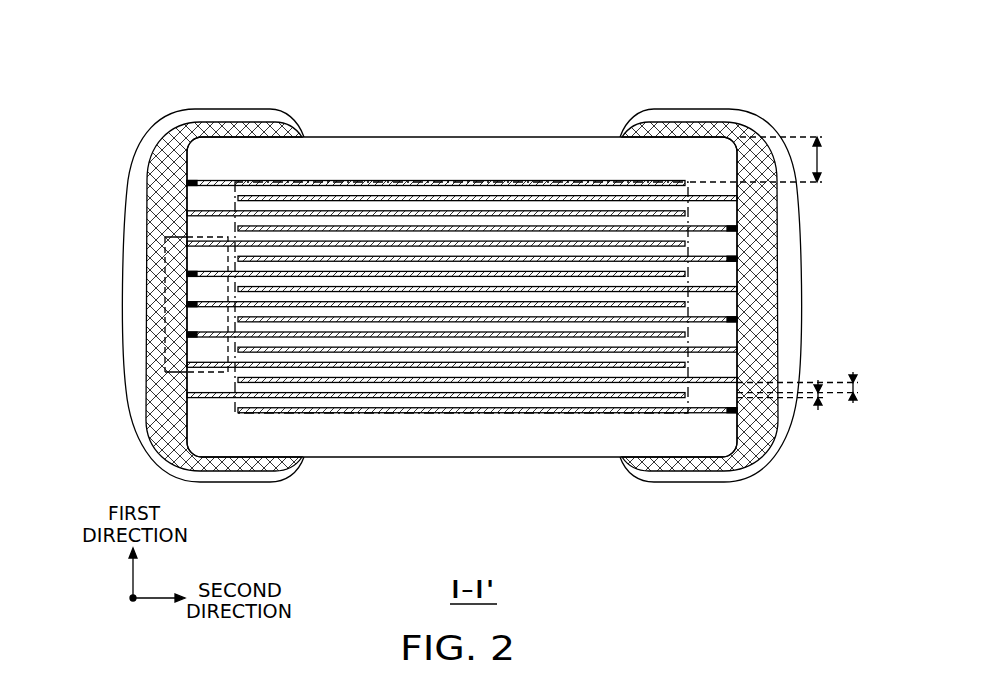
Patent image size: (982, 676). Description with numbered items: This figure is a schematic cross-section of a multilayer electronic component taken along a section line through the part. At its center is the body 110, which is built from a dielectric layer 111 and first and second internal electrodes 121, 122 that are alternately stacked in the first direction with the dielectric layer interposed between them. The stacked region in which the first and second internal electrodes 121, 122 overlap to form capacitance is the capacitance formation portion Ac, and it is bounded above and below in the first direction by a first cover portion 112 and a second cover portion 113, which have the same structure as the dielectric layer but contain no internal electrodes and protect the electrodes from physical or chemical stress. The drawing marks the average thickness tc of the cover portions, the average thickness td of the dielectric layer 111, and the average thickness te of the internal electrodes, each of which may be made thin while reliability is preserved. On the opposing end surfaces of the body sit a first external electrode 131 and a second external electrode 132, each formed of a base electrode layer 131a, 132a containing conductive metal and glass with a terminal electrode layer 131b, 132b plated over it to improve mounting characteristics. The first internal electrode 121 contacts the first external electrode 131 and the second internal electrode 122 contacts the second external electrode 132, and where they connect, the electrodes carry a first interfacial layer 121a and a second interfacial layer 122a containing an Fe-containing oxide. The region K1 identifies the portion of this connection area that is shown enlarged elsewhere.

The body 110 is at (408, 137).
The dielectric layer 111 is at (352, 207).
The first cover portion 112 is at (462, 148).
The second cover portion 113 is at (430, 452).
The first internal electrode 121 is at (535, 182).
The second internal electrode 122 is at (555, 198).
The first interfacial layer 121a is at (190, 336).
The second interfacial layer 122a is at (740, 320).
The first external electrode 131 is at (175, 241).
The first base electrode layer 131a is at (97, 261).
The first terminal electrode layer 131b is at (197, 10).
The second external electrode 132 is at (749, 241).
The second base electrode layer 132a is at (827, 262).
The second terminal electrode layer 132b is at (827, 292).
The region K1 is at (163, 250).
The capacitance formation portion Ac is at (512, 413).
The average thickness of the cover portions tc is at (766, 159).
The average thickness of the dielectric layer td is at (808, 387).
The average thickness of the internal electrodes te is at (791, 397).